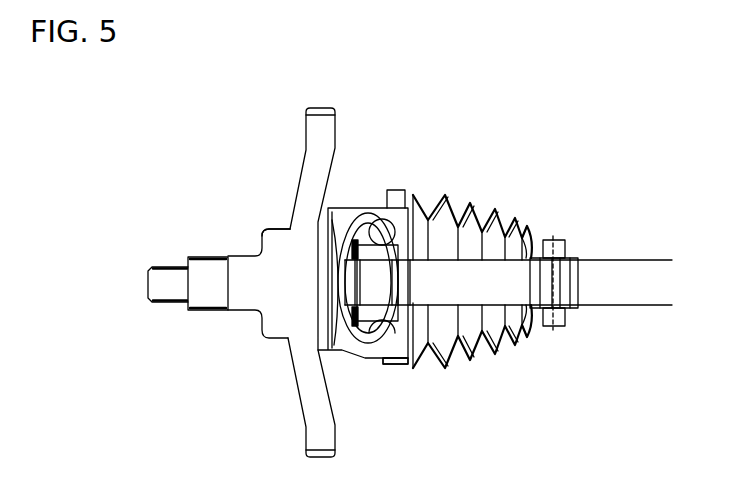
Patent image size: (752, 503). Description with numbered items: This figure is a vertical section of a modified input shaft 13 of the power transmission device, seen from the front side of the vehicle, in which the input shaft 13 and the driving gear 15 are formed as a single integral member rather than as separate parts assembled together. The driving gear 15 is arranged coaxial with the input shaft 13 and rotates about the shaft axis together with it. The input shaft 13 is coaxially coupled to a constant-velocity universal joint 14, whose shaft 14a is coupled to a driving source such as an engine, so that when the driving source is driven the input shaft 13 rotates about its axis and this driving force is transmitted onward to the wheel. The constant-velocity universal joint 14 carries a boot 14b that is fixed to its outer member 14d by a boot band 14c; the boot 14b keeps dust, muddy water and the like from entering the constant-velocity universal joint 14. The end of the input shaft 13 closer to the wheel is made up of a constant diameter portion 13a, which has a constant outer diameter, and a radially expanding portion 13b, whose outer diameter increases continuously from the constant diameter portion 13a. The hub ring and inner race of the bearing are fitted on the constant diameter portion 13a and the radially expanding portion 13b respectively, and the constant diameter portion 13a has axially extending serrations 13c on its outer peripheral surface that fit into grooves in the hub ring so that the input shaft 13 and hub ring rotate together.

The input shaft 13 is at (287, 307).
The constant diameter portion 13a is at (207, 256).
The radially expanding portion 13b is at (258, 237).
The serrations 13c is at (207, 295).
The constant-velocity universal joint 14 is at (473, 171).
The shaft 14a is at (510, 273).
The boot 14b is at (498, 214).
The boot band 14c is at (395, 363).
The outer member 14d is at (347, 350).
The driving gear 15 is at (318, 160).